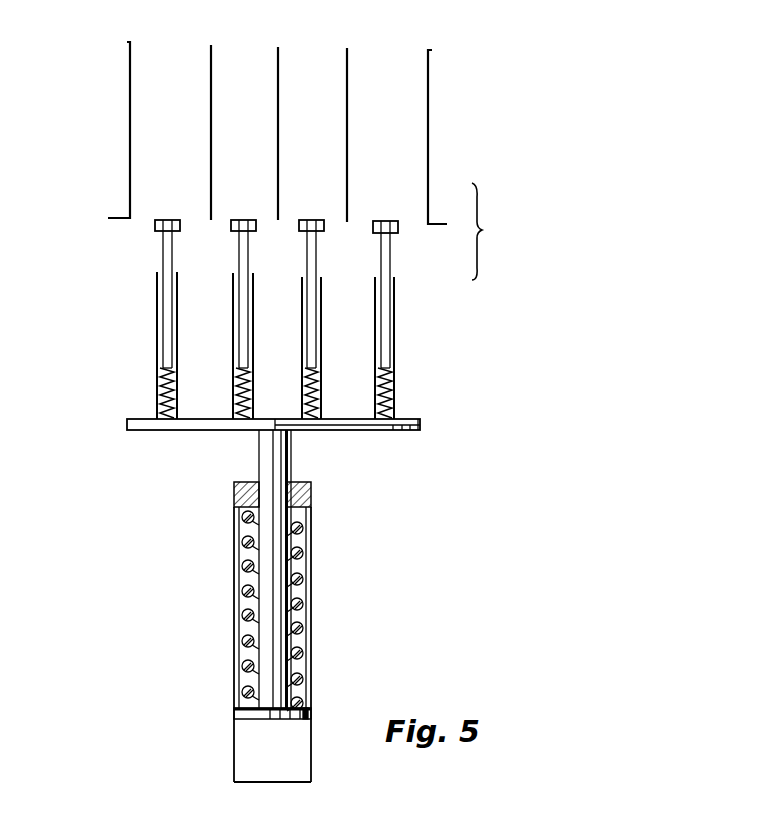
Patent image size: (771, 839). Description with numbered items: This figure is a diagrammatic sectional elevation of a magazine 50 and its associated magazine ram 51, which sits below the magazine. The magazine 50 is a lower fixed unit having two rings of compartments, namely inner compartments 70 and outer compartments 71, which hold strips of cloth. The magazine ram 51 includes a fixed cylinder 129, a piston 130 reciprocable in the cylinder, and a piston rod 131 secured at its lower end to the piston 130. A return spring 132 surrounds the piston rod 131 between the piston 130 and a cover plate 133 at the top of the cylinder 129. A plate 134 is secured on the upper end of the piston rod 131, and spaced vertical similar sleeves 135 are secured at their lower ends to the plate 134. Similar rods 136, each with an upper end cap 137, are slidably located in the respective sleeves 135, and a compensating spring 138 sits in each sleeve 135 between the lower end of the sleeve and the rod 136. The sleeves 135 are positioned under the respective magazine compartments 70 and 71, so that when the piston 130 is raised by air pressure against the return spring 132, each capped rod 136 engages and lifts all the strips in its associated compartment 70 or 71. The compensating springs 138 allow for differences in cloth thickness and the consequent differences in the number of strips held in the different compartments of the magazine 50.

The magazine 50 is at (121, 162).
The magazine ram 51 is at (231, 623).
The inner compartment 70 is at (306, 73).
The outer compartment 71 is at (170, 81).
The fixed cylinder 129 is at (311, 608).
The piston 130 is at (255, 714).
The piston rod 131 is at (305, 565).
The return spring 132 is at (305, 528).
The cover plate 133 is at (312, 490).
The plate 134 is at (420, 430).
The sleeve 135 is at (157, 372).
The rod 136 is at (178, 258).
The upper end cap 137 is at (401, 227).
The compensating spring 138 is at (397, 393).